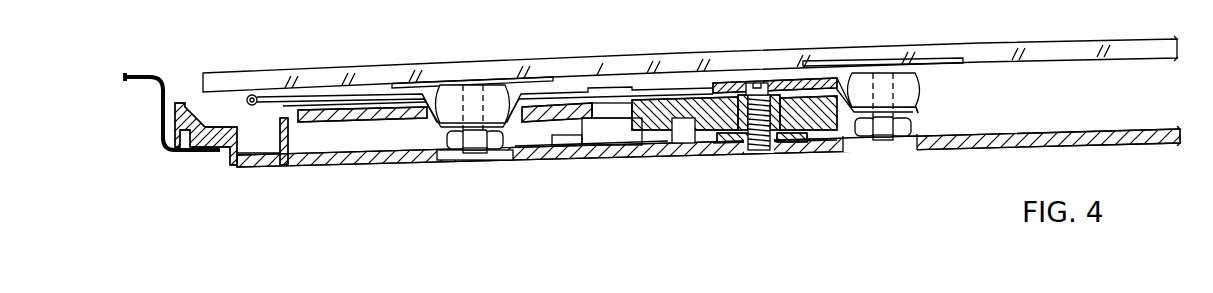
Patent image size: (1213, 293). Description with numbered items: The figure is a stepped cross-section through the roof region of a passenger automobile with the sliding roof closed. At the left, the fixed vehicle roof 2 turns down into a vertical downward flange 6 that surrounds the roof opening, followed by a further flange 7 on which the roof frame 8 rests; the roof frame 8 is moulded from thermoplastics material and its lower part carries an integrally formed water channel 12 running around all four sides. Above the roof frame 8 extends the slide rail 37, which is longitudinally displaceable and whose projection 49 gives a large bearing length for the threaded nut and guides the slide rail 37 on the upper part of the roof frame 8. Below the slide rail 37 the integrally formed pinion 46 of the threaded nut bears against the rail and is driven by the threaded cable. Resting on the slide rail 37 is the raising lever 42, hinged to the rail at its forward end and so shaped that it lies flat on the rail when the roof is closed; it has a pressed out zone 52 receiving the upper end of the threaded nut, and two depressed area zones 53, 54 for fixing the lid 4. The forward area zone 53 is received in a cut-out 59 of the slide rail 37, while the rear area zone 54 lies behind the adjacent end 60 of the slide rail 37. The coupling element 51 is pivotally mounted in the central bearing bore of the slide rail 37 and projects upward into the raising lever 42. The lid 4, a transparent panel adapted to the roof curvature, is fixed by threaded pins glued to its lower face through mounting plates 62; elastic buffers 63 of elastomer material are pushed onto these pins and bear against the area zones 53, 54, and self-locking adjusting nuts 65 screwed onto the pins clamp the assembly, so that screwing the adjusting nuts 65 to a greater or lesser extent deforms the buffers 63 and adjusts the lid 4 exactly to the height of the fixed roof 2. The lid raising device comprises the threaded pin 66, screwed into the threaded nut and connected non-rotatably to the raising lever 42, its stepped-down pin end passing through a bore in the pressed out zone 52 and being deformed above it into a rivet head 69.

The fixed vehicle roof 2 is at (148, 75).
The lid 4 is at (597, 65).
The vertical downward flange 6 is at (167, 97).
The flange 7 is at (182, 152).
The roof frame 8 is at (1076, 127).
The water channel 12 is at (255, 150).
The slide rail 37 is at (345, 123).
The raising lever 42 is at (358, 97).
The pinion 46 is at (722, 133).
The projection 49 is at (695, 122).
The coupling element 51 is at (608, 122).
The pressed out zone 52 is at (793, 83).
The area zone 53 is at (425, 118).
The area zone 54 is at (917, 112).
The cut-out 59 is at (418, 128).
The end of the slide rail 60 is at (833, 123).
The mounting plate 62 is at (963, 66).
The buffer 63 is at (493, 95).
The adjusting nut 65 is at (497, 147).
The threaded pin 66 is at (760, 140).
The rivet head 69 is at (758, 83).